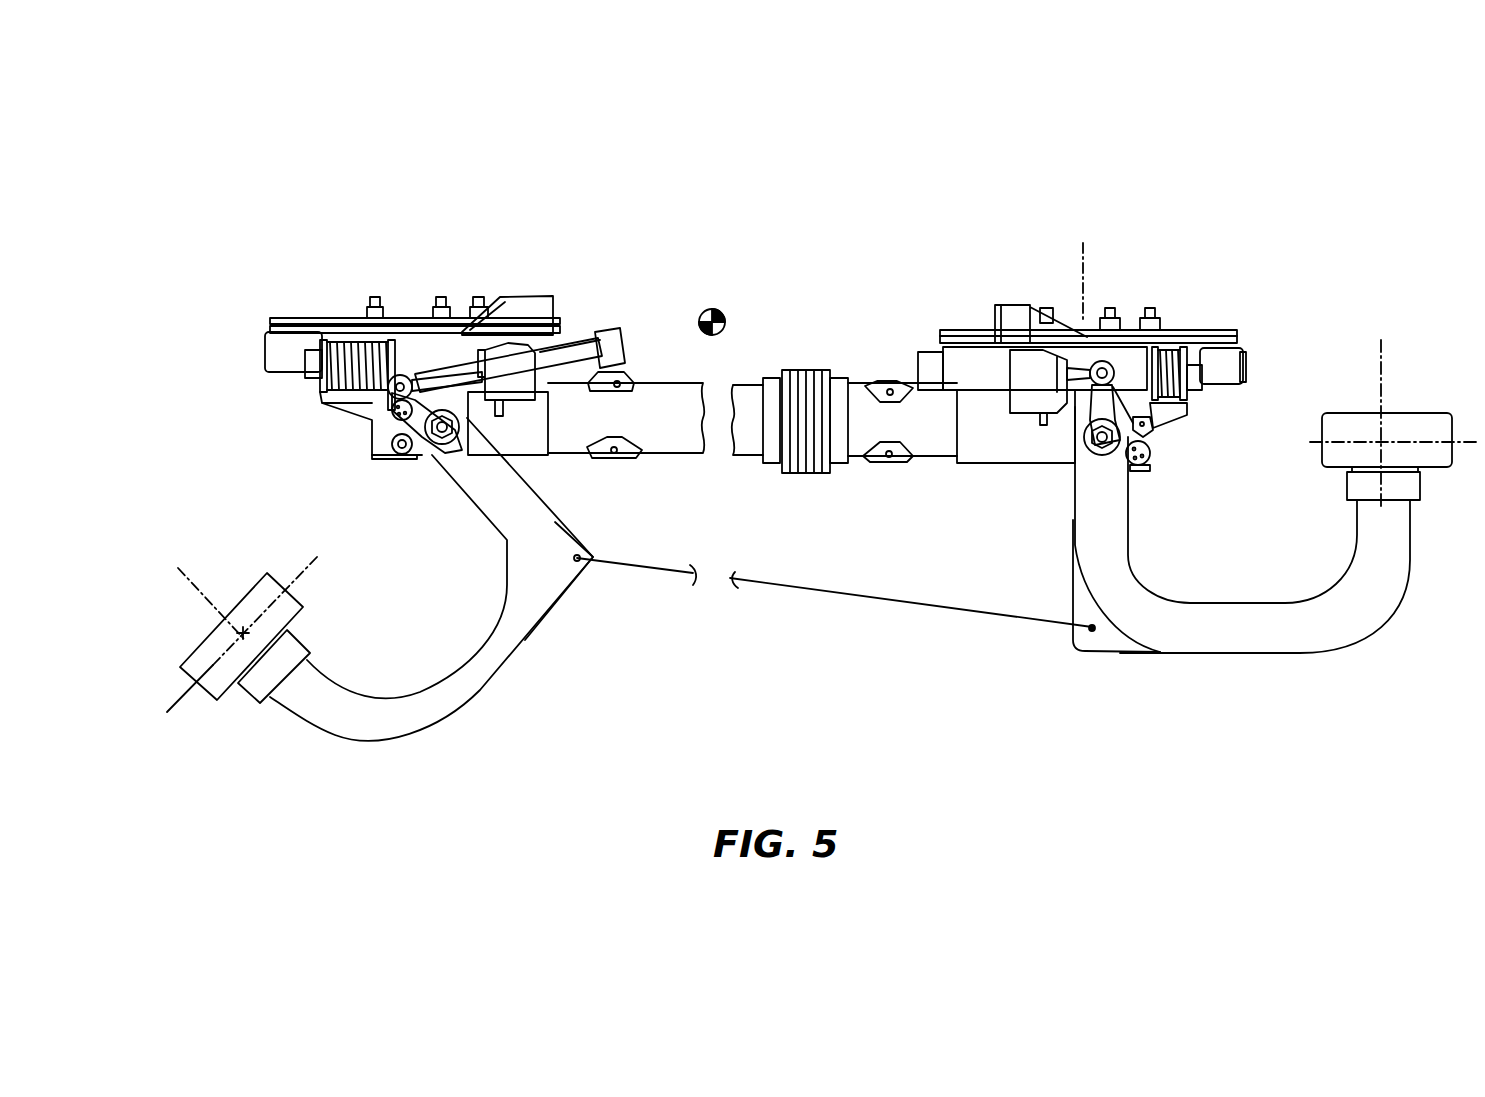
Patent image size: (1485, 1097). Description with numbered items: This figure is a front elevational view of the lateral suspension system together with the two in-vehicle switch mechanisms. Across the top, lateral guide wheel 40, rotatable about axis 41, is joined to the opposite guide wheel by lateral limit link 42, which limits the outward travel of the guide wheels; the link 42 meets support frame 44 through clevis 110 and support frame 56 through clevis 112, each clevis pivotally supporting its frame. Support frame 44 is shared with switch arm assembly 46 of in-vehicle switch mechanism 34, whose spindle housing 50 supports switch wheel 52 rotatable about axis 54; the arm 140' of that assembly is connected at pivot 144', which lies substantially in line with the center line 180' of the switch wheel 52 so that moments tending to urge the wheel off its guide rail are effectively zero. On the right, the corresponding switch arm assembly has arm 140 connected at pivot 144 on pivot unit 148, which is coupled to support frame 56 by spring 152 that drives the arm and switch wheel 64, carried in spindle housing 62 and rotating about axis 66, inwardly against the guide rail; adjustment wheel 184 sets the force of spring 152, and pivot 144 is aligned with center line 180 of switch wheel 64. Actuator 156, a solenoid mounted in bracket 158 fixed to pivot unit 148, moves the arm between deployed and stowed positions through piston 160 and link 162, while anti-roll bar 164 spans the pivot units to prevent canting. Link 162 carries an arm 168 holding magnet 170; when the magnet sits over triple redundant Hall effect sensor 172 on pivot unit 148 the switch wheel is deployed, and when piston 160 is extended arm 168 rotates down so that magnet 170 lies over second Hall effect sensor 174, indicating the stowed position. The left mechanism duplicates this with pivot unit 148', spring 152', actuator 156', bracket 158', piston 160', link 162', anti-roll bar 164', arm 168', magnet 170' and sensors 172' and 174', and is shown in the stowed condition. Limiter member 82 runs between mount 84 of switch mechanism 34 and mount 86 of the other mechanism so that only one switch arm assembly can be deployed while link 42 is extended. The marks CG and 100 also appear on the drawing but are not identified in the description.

The adjustment wheel 184 is at (333, 337).
The spring 152' is at (357, 323).
The link 162' is at (425, 345).
The piston 160' is at (443, 321).
The pivot unit 148' is at (507, 307).
The anti-roll bar 164' is at (440, 285).
The bracket 158' is at (557, 341).
The actuator 156' is at (557, 319).
The triple redundant Hall effect sensor 172' is at (312, 407).
The arm 168' is at (309, 419).
The magnet 170' is at (329, 452).
The second triple redundant Hall effect sensor 174' is at (347, 468).
The pivot 144' is at (433, 465).
The lateral limit link 42 is at (688, 385).
The clevis 110 is at (634, 378).
The support frame 44 is at (617, 468).
The center of gravity CG is at (716, 310).
The arm 140' is at (431, 590).
The mount 84 is at (560, 587).
The switch wheel 52 is at (307, 597).
The spindle housing 50 is at (307, 637).
The axis 54 is at (190, 570).
The center line 180' is at (279, 623).
The switch arm assembly 46 is at (556, 662).
The in-vehicle switch mechanism 34 is at (566, 713).
The limiter member 82 is at (768, 578).
The mount 86 is at (1108, 643).
The clevis 112 is at (870, 385).
The support frame 56 is at (887, 470).
The lateral guide wheel 40 is at (1167, 333).
The anti-roll bar 164 is at (1072, 294).
The pivot unit 148 is at (1032, 293).
The axis 41 is at (1083, 275).
The actuator 156 is at (889, 347).
The bracket 158 is at (973, 351).
The piston 160 is at (1111, 316).
The link 162 is at (1147, 353).
The spring 152 is at (1232, 339).
The end cap 100 is at (1246, 370).
The magnet 170 is at (1206, 412).
The triple redundant Hall effect sensor 172 is at (1189, 437).
The arm 168 is at (1179, 473).
The second triple redundant Hall effect sensor 174 is at (1169, 497).
The pivot 144 is at (1036, 462).
The arm 140 is at (1242, 530).
The switch wheel 64 is at (1353, 423).
The spindle housing 62 is at (1353, 490).
The axis 66 is at (1385, 367).
The center line 180 is at (1431, 402).